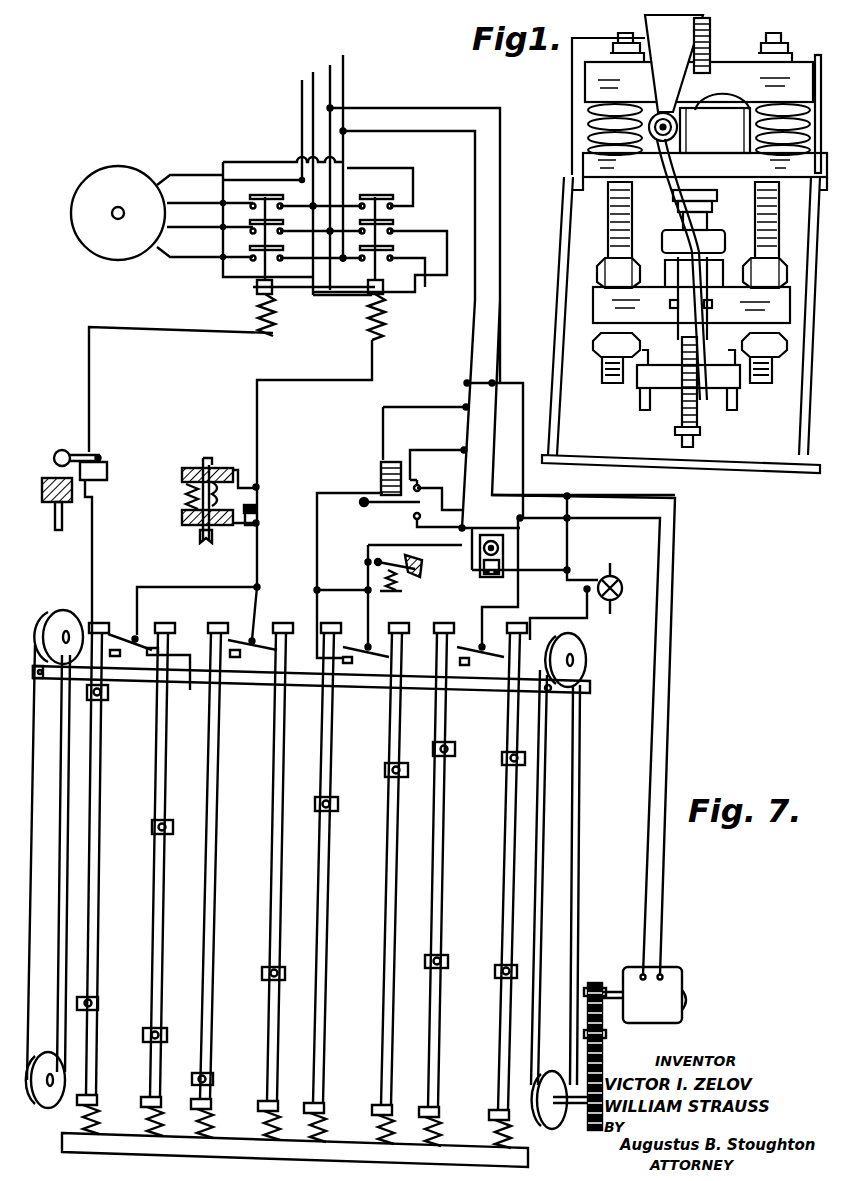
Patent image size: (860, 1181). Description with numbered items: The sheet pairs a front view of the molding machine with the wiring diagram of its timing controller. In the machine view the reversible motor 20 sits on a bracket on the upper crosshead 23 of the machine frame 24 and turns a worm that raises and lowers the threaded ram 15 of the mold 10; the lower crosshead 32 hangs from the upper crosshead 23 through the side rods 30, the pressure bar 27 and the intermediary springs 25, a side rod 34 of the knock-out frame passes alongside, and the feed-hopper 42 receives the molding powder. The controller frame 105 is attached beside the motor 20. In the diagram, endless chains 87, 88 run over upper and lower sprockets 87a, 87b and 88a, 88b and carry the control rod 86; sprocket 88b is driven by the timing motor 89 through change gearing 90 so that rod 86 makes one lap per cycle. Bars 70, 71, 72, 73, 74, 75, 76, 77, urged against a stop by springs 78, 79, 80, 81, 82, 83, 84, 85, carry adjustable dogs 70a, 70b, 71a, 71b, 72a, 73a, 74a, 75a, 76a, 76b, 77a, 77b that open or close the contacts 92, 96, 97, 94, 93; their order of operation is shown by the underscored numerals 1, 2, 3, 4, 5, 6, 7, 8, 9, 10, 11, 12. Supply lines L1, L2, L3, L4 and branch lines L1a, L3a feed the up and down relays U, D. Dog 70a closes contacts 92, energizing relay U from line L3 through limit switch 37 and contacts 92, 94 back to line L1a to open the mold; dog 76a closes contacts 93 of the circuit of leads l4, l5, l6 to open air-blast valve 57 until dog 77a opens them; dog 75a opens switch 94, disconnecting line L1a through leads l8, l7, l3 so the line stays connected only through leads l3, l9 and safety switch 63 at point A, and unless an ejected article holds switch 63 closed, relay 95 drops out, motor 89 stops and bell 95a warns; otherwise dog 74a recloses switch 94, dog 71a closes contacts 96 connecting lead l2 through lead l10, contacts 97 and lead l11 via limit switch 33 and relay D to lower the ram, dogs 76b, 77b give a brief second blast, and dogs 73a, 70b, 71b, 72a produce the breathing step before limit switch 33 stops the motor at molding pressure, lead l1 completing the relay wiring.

In FIG. 1, the frame 105 is at (590, 50).
In FIG. 1, the feed-hopper 42 is at (660, 24).
In FIG. 1, the reversible motor 20 is at (722, 100).
In FIG. 7, the reversible motor 20 is at (100, 248).
In FIG. 1, the pressure bar 27 is at (586, 78).
In FIG. 1, the upper crosshead 23 is at (584, 158).
In FIG. 1, the side rod 34 is at (640, 212).
In FIG. 1, the ram 15 is at (740, 210).
In FIG. 1, the machine frame 24 is at (562, 244).
In FIG. 1, the mold 10 is at (735, 263).
In FIG. 7, the mold 10 is at (98, 1003).
In FIG. 1, the lower crosshead 32 is at (600, 296).
In FIG. 7, the line L1 is at (344, 58).
In FIG. 7, the supply line L2 is at (313, 76).
In FIG. 7, the line L3 is at (330, 68).
In FIG. 7, the supply line L4 is at (302, 82).
In FIG. 7, the line side L1a is at (465, 325).
In FIG. 7, the line side L3a is at (494, 327).
In FIG. 7, the up relay U is at (256, 286).
In FIG. 7, the down relay D is at (366, 288).
In FIG. 7, the conductor l1 is at (91, 394).
In FIG. 7, the lead l2 is at (226, 586).
In FIG. 7, the lead l3 is at (317, 494).
In FIG. 7, the lead l4 is at (481, 615).
In FIG. 7, the lead l5 is at (557, 615).
In FIG. 7, the lead l6 is at (568, 540).
In FIG. 7, the lead l7 is at (316, 614).
In FIG. 7, the lead l8 is at (367, 610).
In FIG. 7, the lead l9 is at (352, 592).
In FIG. 7, the lead l10 is at (190, 692).
In FIG. 7, the lead l11 is at (263, 540).
In FIG. 7, the limit switch 37 is at (92, 452).
In FIG. 7, the springs 25 is at (182, 497).
In FIG. 7, the limit switch 33 is at (240, 498).
In FIG. 7, the side rods 30 is at (198, 543).
In FIG. 7, the relay 95 is at (412, 512).
In FIG. 7, the bell 95a is at (500, 548).
In FIG. 7, the valve 57 is at (616, 578).
In FIG. 7, the safety switch 63 is at (424, 576).
In FIG. 7, the contact point A is at (417, 604).
In FIG. 7, the upper pulley 87a is at (62, 620).
In FIG. 7, the lower pulley 87b is at (48, 1100).
In FIG. 7, the endless chain 87 is at (40, 868).
In FIG. 7, the upper pulley 88a is at (575, 645).
In FIG. 7, the lower pulley 88b is at (560, 1118).
In FIG. 7, the endless chain 88 is at (578, 802).
In FIG. 7, the control rod 86 is at (252, 688).
In FIG. 7, the contacts 92 is at (132, 636).
In FIG. 7, the contacts 96 is at (152, 648).
In FIG. 7, the contacts 97 is at (247, 655).
In FIG. 7, the switch 94 is at (350, 660).
In FIG. 7, the contacts 93 is at (478, 668).
In FIG. 7, the bar 70 is at (104, 870).
In FIG. 7, the bar 71 is at (167, 870).
In FIG. 7, the bar 72 is at (223, 870).
In FIG. 7, the bar 73 is at (288, 870).
In FIG. 7, the bar 74 is at (341, 870).
In FIG. 7, the bar 75 is at (406, 870).
In FIG. 7, the bar 76 is at (453, 870).
In FIG. 7, the bar 77 is at (512, 843).
In FIG. 7, the dog 70a is at (108, 690).
In FIG. 7, the dog 70b is at (98, 998).
In FIG. 7, the dog 71a is at (170, 820).
In FIG. 7, the dog 71b is at (167, 1030).
In FIG. 7, the dog 72a is at (210, 1073).
In FIG. 7, the dog 73a is at (266, 967).
In FIG. 7, the dog 74a is at (336, 800).
In FIG. 7, the dog 75a is at (390, 764).
In FIG. 7, the dog 76a is at (460, 742).
In FIG. 7, the dog 76b is at (447, 956).
In FIG. 7, the dog 77a is at (525, 757).
In FIG. 7, the dog 77b is at (505, 978).
In FIG. 7, the order numeral 1 is at (104, 703).
In FIG. 7, the order numeral 2 is at (455, 757).
In FIG. 7, the order numeral 3 is at (502, 765).
In FIG. 7, the order numeral 4 is at (406, 778).
In FIG. 7, the order numeral 5 is at (338, 806).
In FIG. 7, the order numeral 6 is at (170, 834).
In FIG. 7, the order numeral 7 is at (425, 958).
In FIG. 7, the order numeral 8 is at (495, 970).
In FIG. 7, the order numeral 9 is at (286, 980).
In FIG. 7, the order numeral 11 is at (168, 1040).
In FIG. 7, the order numeral 12 is at (214, 1082).
In FIG. 7, the spring 78 is at (98, 1127).
In FIG. 7, the spring 79 is at (84, 1118).
In FIG. 7, the spring 80 is at (198, 1130).
In FIG. 7, the spring 81 is at (262, 1128).
In FIG. 7, the spring 82 is at (310, 1128).
In FIG. 7, the spring 83 is at (375, 1132).
In FIG. 7, the spring 84 is at (435, 1128).
In FIG. 7, the spring 85 is at (495, 1130).
In FIG. 7, the motor 89 is at (672, 972).
In FIG. 7, the change gearing 90 is at (640, 1050).